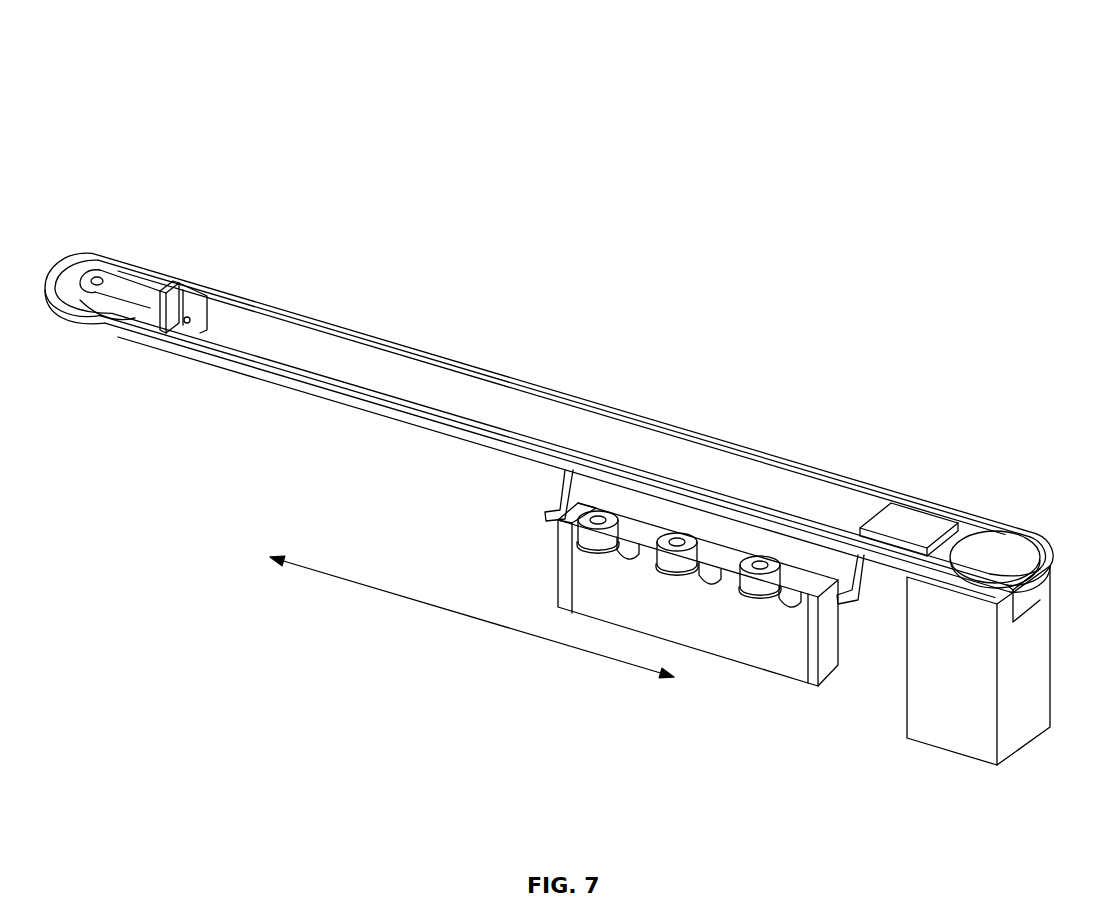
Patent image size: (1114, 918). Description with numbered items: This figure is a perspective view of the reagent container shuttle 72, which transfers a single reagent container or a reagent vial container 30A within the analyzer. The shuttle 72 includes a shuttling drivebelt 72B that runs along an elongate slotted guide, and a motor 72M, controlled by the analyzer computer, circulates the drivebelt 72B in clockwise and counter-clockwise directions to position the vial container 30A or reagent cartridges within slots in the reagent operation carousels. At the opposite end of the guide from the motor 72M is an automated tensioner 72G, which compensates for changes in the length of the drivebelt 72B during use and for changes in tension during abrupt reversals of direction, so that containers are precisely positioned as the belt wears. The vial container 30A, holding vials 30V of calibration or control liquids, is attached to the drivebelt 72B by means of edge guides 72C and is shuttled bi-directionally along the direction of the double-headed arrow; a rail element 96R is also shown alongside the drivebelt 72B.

The reagent container shuttle 72 is at (612, 168).
The shuttling drivebelt 72B is at (312, 313).
The edge guides 72C is at (563, 470).
The automated tensioner 72G is at (126, 362).
The motor 72M is at (1015, 698).
The rail 96R is at (708, 435).
The reagent vial container 30A is at (810, 684).
The vials 30V is at (765, 585).